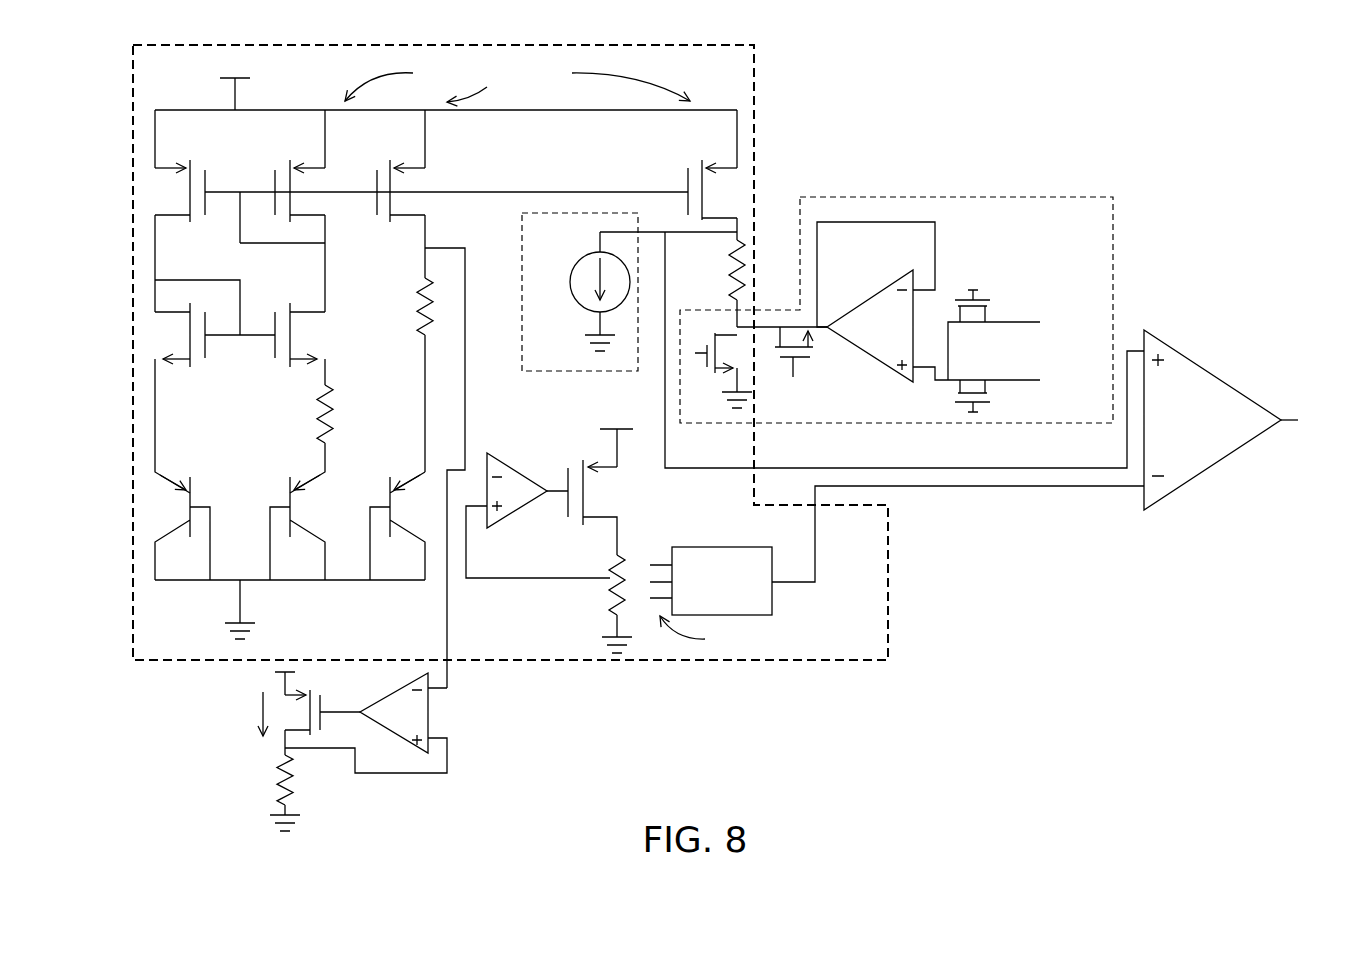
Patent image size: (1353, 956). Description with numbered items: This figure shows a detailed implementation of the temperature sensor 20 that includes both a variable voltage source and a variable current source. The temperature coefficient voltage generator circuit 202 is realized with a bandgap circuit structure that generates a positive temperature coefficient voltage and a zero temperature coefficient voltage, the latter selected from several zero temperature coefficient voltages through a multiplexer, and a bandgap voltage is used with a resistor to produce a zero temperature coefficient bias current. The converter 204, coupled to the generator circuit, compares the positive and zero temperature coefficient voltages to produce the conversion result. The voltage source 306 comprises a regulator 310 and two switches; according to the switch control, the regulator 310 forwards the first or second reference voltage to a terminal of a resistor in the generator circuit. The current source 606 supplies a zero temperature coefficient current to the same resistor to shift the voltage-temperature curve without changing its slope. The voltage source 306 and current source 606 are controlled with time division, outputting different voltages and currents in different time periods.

The temperature sensor 20 is at (1160, 114).
The temperature coefficient voltage generator circuit 202 is at (888, 600).
The converter 204 is at (1212, 466).
The voltage source 306 is at (946, 197).
The regulator 310 is at (870, 326).
The current source 606 is at (553, 372).